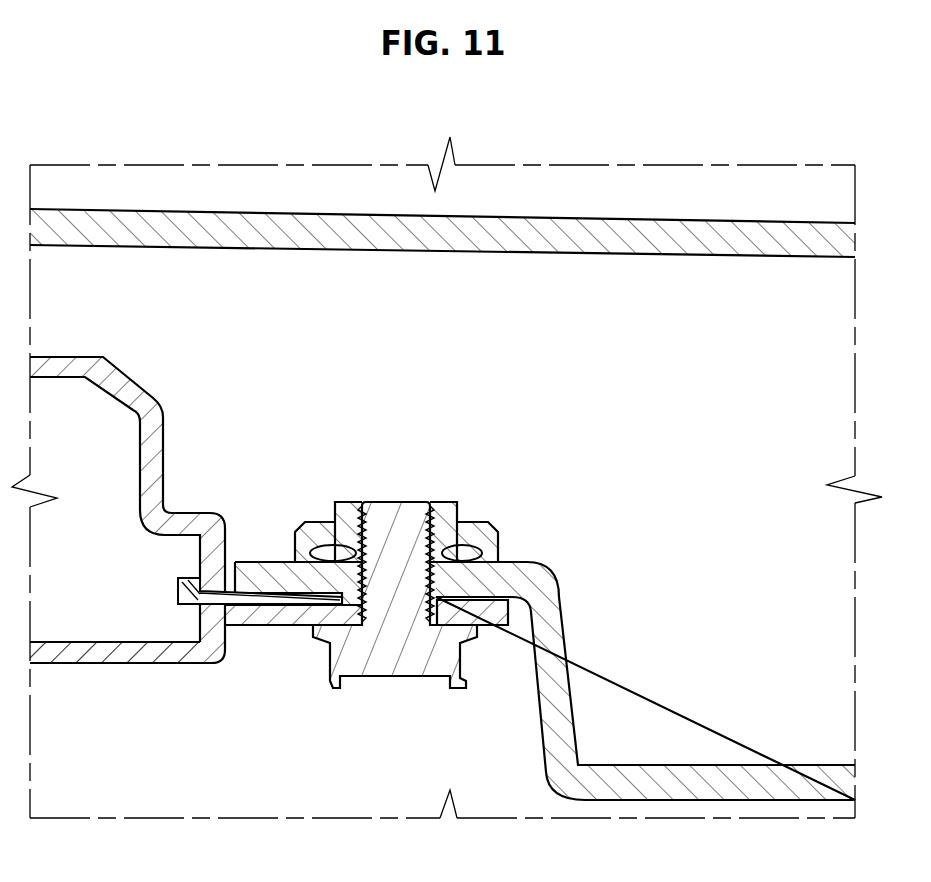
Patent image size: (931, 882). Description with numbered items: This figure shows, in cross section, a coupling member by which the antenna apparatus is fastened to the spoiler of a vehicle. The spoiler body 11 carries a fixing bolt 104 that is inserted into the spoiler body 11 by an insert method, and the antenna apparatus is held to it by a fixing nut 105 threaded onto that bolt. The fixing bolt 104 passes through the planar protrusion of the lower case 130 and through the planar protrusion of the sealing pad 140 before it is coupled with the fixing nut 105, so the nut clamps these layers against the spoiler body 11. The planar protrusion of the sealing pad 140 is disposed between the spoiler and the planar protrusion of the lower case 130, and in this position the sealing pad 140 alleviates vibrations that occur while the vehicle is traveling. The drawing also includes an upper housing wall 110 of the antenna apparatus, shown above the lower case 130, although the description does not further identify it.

The spoiler body 11 is at (557, 607).
The fixing bolt 104 is at (396, 502).
The fixing nut 105 is at (341, 502).
The cover wall 110 is at (157, 456).
The lower case 130 is at (148, 662).
The sealing pad 140 is at (178, 591).